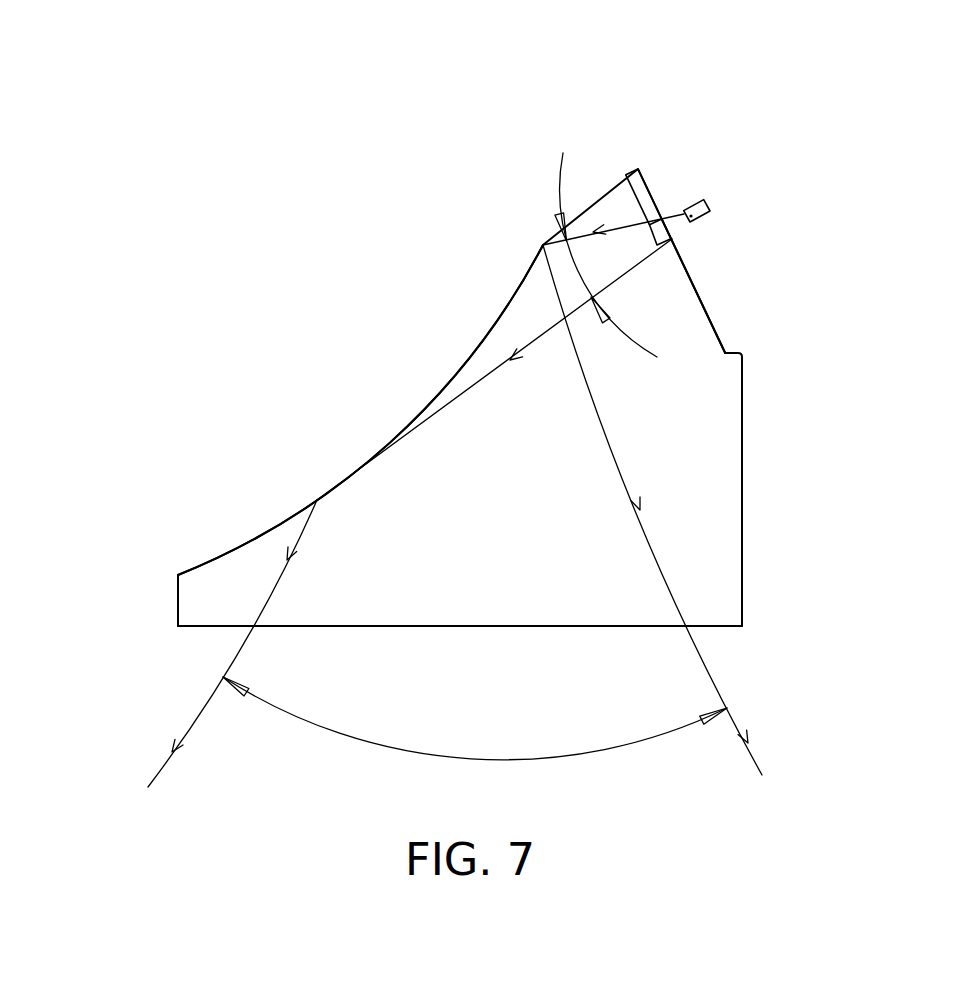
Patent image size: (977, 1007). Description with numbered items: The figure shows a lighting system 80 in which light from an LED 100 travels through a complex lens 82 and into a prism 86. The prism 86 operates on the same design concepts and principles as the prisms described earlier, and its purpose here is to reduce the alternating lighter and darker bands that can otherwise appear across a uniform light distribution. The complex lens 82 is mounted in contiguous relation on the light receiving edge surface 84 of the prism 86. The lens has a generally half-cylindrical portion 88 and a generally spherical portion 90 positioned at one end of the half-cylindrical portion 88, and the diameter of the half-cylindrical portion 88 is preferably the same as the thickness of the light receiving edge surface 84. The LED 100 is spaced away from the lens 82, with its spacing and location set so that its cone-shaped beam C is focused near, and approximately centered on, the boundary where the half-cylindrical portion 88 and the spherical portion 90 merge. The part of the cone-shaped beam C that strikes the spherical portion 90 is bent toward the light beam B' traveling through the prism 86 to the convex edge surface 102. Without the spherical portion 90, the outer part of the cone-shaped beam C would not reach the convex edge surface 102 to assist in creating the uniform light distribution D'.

The lighting system 80 is at (815, 392).
The complex lens 82 is at (642, 170).
The light receiving edge surface 84 is at (712, 323).
The prism 86 is at (554, 484).
The half-cylindrical portion 88 is at (645, 200).
The spherical portion 90 is at (672, 244).
The LED 100 is at (670, 214).
The convex edge surface 102 is at (442, 387).
The cone-shaped beam C is at (678, 222).
The light beam B' is at (494, 326).
The uniform light distribution D' is at (455, 516).